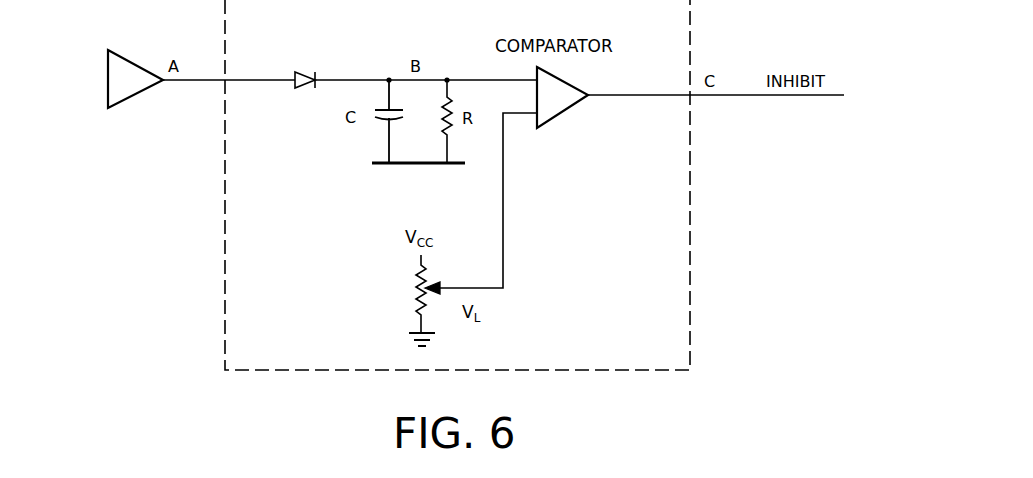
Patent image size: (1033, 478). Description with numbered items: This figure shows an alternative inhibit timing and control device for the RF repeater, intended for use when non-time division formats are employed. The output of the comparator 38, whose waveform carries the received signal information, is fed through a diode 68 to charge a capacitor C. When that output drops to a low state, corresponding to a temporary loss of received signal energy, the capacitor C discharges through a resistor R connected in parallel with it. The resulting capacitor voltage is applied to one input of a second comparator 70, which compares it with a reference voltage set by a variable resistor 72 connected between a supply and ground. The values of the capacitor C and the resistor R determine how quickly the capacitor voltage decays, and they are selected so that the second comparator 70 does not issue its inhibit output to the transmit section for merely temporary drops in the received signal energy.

The comparator 38 is at (130, 58).
The diode 68 is at (304, 64).
The second comparator 70 is at (562, 114).
The variable resistor 72 is at (415, 288).